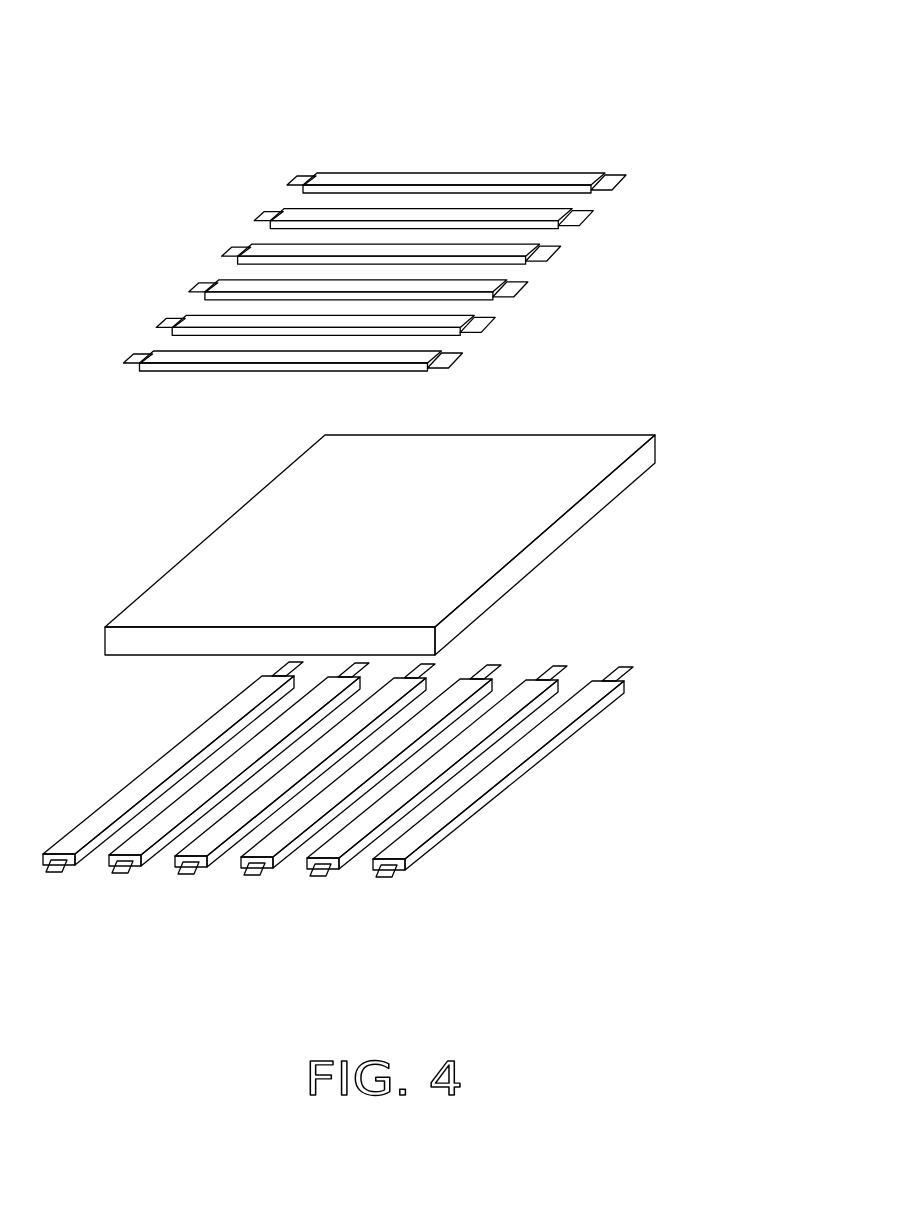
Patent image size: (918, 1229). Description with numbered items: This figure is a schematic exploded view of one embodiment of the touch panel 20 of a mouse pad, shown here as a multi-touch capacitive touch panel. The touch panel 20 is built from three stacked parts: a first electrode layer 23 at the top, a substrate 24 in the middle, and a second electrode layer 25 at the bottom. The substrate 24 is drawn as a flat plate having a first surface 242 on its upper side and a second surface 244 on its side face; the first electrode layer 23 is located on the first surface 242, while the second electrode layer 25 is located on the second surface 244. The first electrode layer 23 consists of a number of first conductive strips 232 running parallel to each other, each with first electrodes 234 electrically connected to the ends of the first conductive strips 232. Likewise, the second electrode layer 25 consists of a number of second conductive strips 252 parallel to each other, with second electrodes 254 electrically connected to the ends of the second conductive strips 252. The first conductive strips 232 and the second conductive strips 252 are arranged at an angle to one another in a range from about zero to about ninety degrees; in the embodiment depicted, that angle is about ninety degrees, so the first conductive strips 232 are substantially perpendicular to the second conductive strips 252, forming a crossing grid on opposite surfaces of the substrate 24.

The touch panel 20 is at (392, 56).
The first electrode layer 23 is at (439, 245).
The first conductive strips 232 is at (568, 182).
The first electrodes 234 is at (612, 181).
The substrate 24 is at (456, 516).
The first surface 242 is at (618, 447).
The second surface 244 is at (630, 487).
The second electrode layer 25 is at (414, 754).
The second conductive strips 252 is at (595, 698).
The second electrodes 254 is at (627, 670).